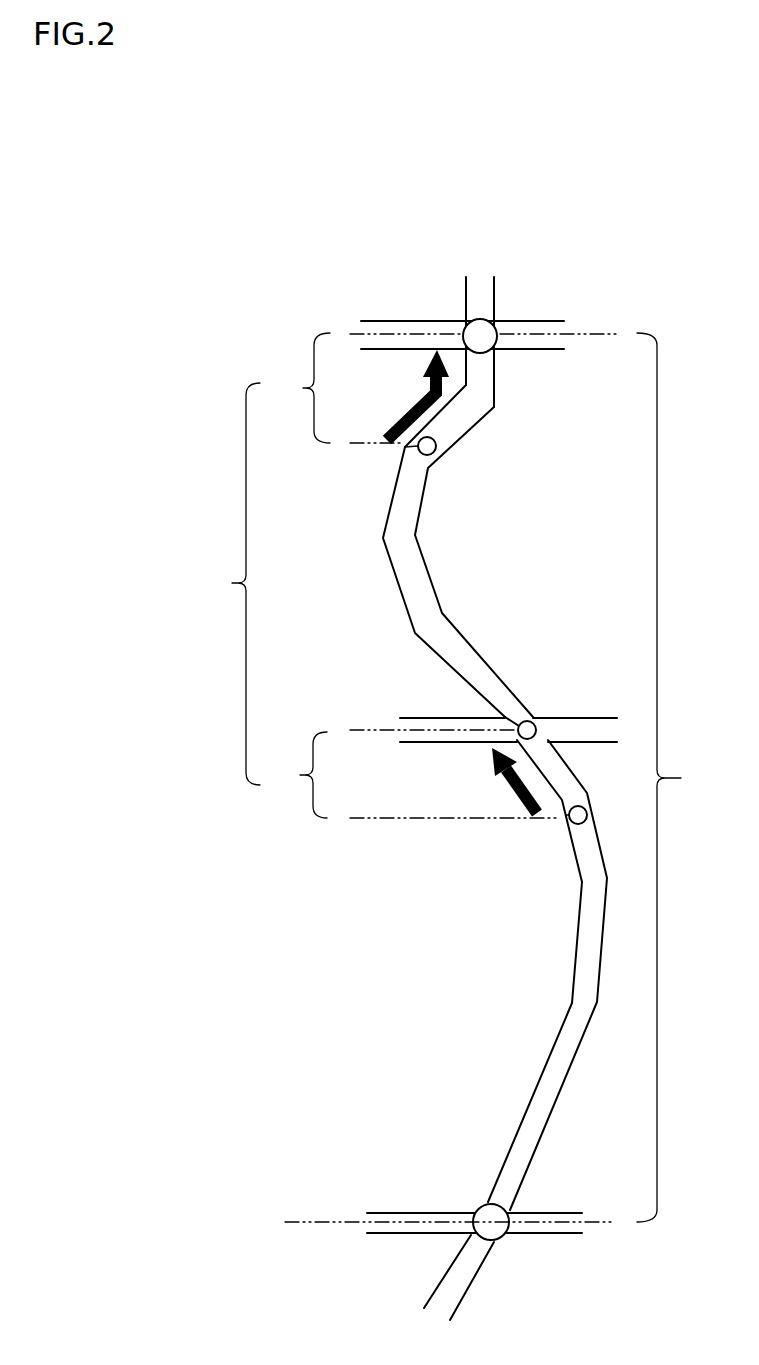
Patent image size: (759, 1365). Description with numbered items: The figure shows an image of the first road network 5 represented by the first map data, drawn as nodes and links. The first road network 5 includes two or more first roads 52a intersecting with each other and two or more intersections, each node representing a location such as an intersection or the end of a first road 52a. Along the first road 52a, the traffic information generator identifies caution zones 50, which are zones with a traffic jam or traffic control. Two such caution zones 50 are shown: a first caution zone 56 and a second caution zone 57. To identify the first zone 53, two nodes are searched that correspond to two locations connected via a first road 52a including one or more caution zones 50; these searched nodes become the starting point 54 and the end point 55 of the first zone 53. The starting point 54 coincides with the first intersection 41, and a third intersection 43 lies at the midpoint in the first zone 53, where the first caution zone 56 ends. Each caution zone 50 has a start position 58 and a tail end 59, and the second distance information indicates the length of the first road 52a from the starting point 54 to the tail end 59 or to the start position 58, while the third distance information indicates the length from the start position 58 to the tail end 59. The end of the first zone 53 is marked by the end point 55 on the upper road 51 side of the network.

The first road network 5 is at (220, 328).
The first intersection 41 is at (535, 1197).
The third intersection 43 is at (542, 700).
The caution zone 50 is at (228, 584).
The upper rail 51 is at (505, 308).
The first road 52a is at (398, 573).
The first zone 53 is at (504, 777).
The starting point 54 is at (490, 1203).
The end point 55 is at (483, 337).
The first caution zone 56 is at (414, 774).
The second caution zone 57 is at (360, 388).
The start position 58 is at (481, 343).
The tail end 59 is at (435, 453).